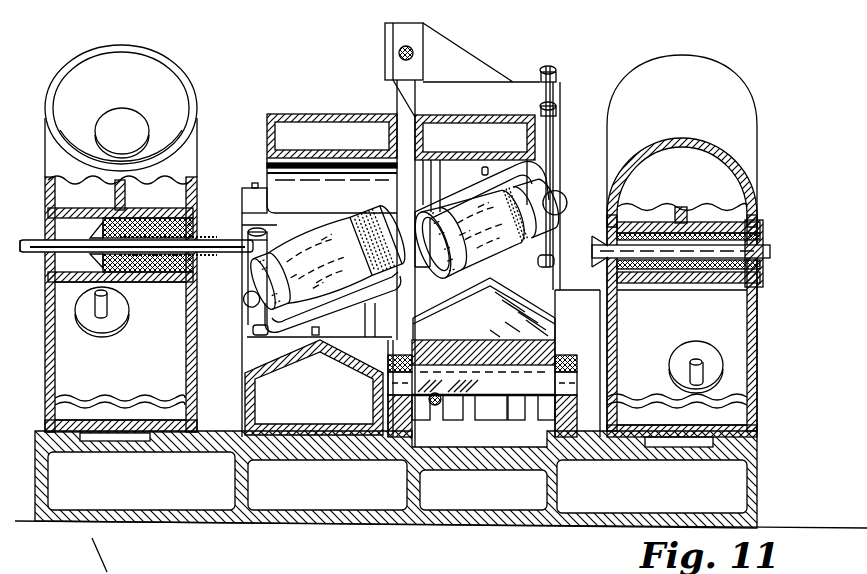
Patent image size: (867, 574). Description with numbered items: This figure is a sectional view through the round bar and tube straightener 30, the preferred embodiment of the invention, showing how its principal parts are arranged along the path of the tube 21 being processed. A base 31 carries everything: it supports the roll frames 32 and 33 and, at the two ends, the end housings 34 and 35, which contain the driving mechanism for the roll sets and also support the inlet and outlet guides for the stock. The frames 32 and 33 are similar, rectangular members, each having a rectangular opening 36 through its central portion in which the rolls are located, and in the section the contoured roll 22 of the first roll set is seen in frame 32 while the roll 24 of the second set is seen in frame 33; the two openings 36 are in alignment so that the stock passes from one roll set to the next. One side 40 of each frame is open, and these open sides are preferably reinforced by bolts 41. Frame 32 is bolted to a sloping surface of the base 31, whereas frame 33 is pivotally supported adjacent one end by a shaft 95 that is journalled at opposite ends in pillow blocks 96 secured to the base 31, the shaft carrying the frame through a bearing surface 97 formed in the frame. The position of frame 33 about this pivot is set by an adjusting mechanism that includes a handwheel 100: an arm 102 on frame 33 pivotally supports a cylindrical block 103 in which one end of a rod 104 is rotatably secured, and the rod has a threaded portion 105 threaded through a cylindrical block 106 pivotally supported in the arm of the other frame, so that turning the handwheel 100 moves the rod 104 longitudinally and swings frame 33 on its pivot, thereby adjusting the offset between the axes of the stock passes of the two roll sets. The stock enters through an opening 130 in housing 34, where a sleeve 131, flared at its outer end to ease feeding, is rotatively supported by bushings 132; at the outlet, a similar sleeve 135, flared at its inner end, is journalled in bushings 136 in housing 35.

The tube 21 is at (33, 252).
The roll 22 is at (312, 240).
The roll 24 is at (500, 257).
The round bar and tube straightener 30 is at (604, 507).
The base 31 is at (224, 440).
The roll frame 32 is at (364, 114).
The roll frame 33 is at (487, 117).
The end housing 34 is at (197, 136).
The end housing 35 is at (723, 47).
The rectangular opening 36 is at (275, 183).
The open side 40 is at (248, 322).
The bolt 41 is at (242, 262).
The shaft 95 is at (477, 406).
The pillow block 96 is at (400, 350).
The bearing surface 97 is at (443, 347).
The handwheel 100 is at (90, 572).
The arm 102 is at (440, 50).
The cylindrical block 103 is at (410, 33).
The rod 104 is at (397, 53).
The threaded portion 105 is at (190, 572).
The cylindrical block 106 is at (248, 573).
The opening 130 is at (120, 199).
The sleeve 131 is at (103, 233).
The bushing 132 is at (132, 213).
The sleeve 135 is at (767, 252).
The bushing 136 is at (725, 237).